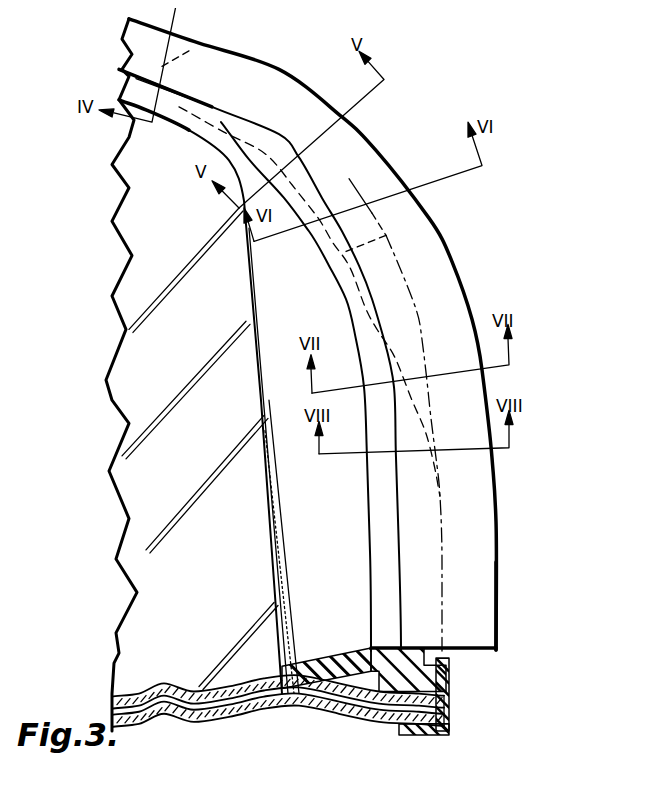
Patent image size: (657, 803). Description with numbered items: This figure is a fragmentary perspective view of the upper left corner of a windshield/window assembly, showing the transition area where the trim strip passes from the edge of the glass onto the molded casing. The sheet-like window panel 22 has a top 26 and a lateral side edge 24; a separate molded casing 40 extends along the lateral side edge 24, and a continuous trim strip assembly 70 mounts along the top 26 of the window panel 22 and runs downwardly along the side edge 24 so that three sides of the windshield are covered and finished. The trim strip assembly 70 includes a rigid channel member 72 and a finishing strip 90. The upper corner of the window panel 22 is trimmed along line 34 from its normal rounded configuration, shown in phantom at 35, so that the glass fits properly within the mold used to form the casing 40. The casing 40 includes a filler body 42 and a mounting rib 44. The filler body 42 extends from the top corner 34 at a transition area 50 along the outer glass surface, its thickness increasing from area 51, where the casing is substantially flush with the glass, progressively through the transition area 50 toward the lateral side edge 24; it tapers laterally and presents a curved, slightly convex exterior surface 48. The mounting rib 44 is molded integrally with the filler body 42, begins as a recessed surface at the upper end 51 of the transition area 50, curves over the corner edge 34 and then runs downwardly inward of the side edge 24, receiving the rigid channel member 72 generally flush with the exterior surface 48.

The window panel 22 is at (188, 358).
The lateral side edge 24 is at (440, 527).
The top of window panel 26 is at (225, 44).
The trim line at upper corner 34 is at (387, 237).
The normal rounded corner configuration 35 is at (355, 181).
The molded casing 40 is at (309, 522).
The filler body 42 is at (287, 558).
The mounting rib 44 is at (387, 647).
The exterior surface of filler body 48 is at (313, 298).
The transition area 50 is at (182, 204).
The upper end of transition area 51 is at (187, 123).
The trim strip assembly 70 is at (467, 252).
The rigid channel member 72 is at (378, 480).
The finishing strip 90 is at (485, 487).